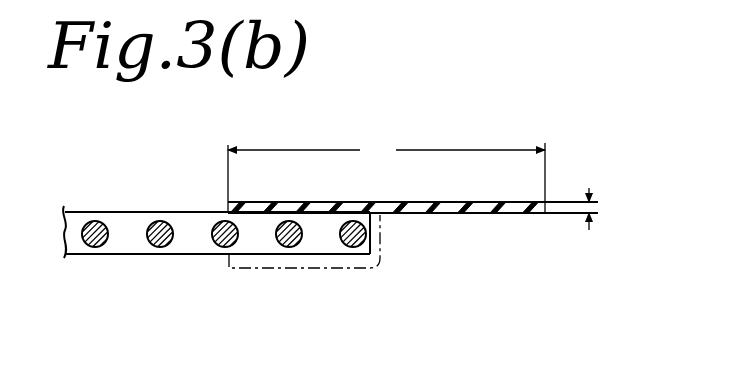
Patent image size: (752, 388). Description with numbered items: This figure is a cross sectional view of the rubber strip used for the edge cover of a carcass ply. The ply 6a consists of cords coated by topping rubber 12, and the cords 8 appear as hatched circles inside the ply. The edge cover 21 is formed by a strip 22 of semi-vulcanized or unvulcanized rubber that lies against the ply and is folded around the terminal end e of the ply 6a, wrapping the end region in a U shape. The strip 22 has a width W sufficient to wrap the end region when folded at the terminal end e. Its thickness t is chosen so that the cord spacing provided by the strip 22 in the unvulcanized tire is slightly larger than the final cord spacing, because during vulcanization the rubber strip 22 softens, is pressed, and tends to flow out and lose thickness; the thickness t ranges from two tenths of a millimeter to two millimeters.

The ply 6a is at (103, 212).
The topping rubber 12 is at (190, 226).
The conductors 8 is at (162, 242).
The edge cover 21 is at (498, 197).
The strip 22 is at (500, 214).
The width of strip W is at (386, 175).
The thickness t is at (596, 208).
The terminal end e is at (372, 238).